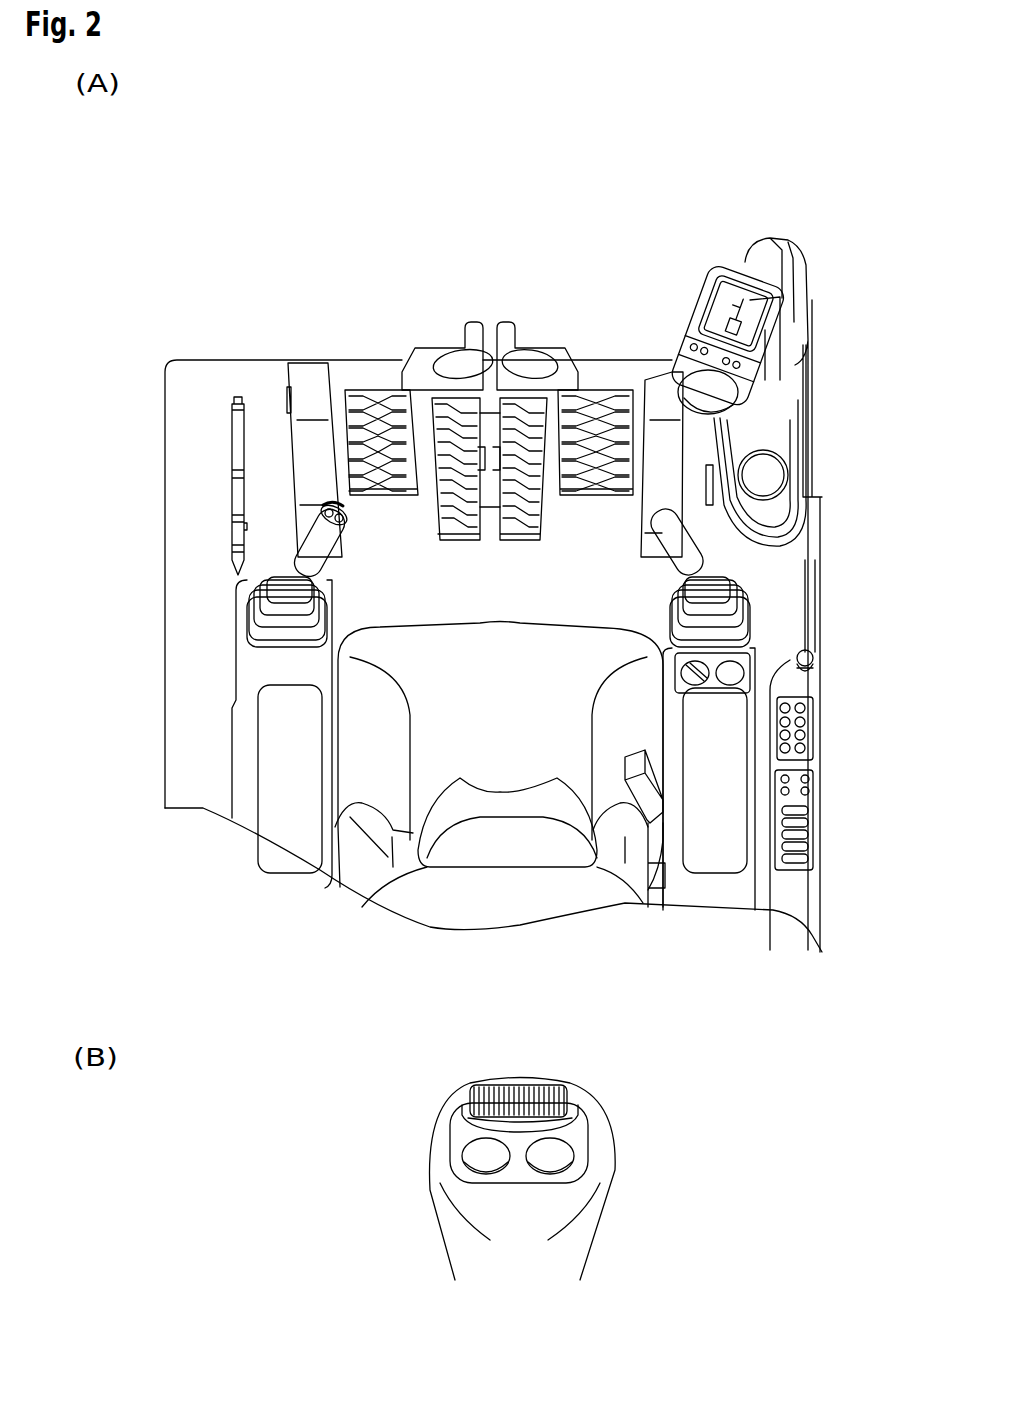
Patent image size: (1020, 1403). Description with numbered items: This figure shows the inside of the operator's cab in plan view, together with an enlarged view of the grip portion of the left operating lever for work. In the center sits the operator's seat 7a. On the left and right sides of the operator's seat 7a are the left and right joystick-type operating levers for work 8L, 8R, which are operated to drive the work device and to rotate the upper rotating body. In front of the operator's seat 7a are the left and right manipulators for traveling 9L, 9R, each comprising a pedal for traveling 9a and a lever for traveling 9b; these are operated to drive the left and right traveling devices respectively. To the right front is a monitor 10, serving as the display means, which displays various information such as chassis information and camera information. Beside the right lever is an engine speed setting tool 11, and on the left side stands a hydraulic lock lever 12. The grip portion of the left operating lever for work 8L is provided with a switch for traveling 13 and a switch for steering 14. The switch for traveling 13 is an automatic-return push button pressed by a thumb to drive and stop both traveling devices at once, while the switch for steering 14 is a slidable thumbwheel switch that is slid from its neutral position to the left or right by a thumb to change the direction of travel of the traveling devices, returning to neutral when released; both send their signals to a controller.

The operator's seat 7a is at (500, 750).
The left operating lever for work 8L is at (313, 533).
The right operating lever for work 8R is at (692, 558).
The left manipulator for traveling 9L is at (420, 374).
The right manipulator for traveling 9R is at (564, 375).
The pedal for traveling 9a is at (453, 490).
The lever for traveling 9b is at (450, 347).
The monitor 10 is at (730, 280).
The engine speed setting tool 11 is at (707, 660).
The hydraulic lock lever 12 is at (235, 442).
The switch for traveling 13 is at (335, 518).
The switch for steering 14 is at (332, 511).